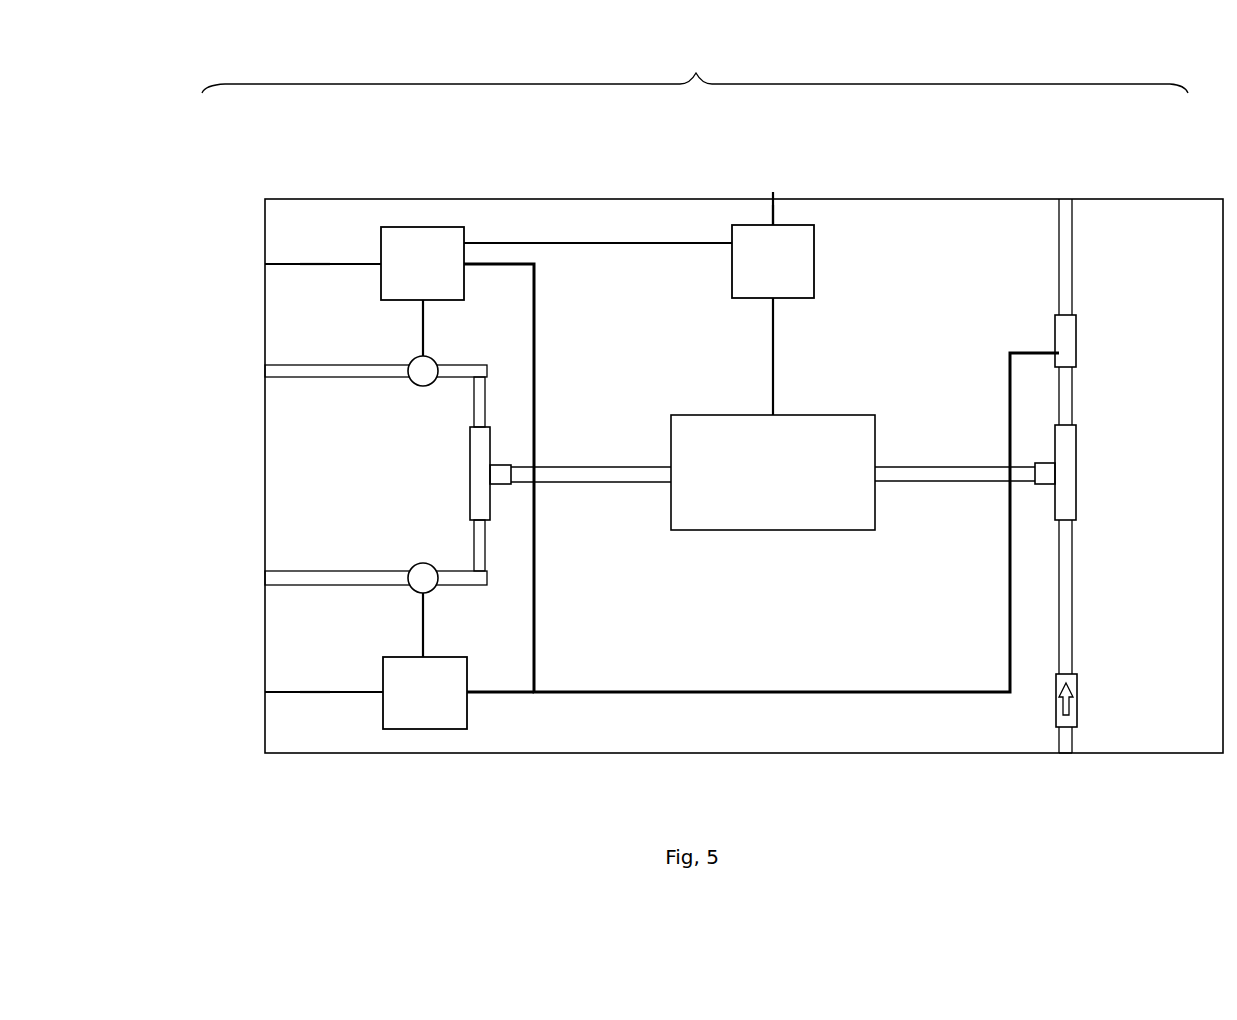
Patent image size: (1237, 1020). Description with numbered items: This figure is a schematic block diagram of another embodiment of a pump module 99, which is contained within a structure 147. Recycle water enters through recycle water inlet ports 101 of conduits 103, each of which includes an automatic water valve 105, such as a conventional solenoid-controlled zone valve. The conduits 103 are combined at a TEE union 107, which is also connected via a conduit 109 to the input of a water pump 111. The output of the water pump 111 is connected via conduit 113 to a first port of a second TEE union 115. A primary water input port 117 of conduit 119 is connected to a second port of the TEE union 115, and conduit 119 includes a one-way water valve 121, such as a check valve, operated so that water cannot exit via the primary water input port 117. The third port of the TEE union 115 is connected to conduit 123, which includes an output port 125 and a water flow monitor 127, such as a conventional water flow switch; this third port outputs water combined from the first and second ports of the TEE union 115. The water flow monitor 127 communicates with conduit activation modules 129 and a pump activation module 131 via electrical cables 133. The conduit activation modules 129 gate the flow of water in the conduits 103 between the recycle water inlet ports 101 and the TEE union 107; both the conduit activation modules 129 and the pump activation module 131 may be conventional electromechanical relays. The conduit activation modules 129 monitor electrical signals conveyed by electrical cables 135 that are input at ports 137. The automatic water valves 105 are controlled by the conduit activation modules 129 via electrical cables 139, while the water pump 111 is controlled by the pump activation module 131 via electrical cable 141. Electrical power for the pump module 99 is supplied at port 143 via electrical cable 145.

The pump module 99 is at (695, 55).
The recycle water inlet ports 101 is at (341, 479).
The conduits 103 is at (318, 387).
The automatic water valves 105 is at (423, 387).
The TEE union 107 is at (499, 447).
The conduit 109 is at (572, 490).
The water pump 111 is at (735, 500).
The conduit 113 is at (910, 490).
The TEE union 115 is at (1082, 470).
The primary water input port 117 is at (1063, 758).
The conduit 119 is at (1082, 603).
The one-way water valve 121 is at (1082, 702).
The conduit 123 is at (1082, 383).
The output port 125 is at (1120, 431).
The water flow monitor 127 is at (1052, 322).
The conduit activation modules 129 is at (417, 251).
The pump activation module 131 is at (755, 270).
The electrical cables 133 is at (570, 250).
The electrical cables 135 is at (314, 272).
The ports 137 is at (248, 270).
The electrical cables 139 is at (418, 333).
The electrical cable 141 is at (760, 362).
The port 143 is at (769, 191).
The electrical cable 145 is at (781, 209).
The structure 147 is at (645, 758).